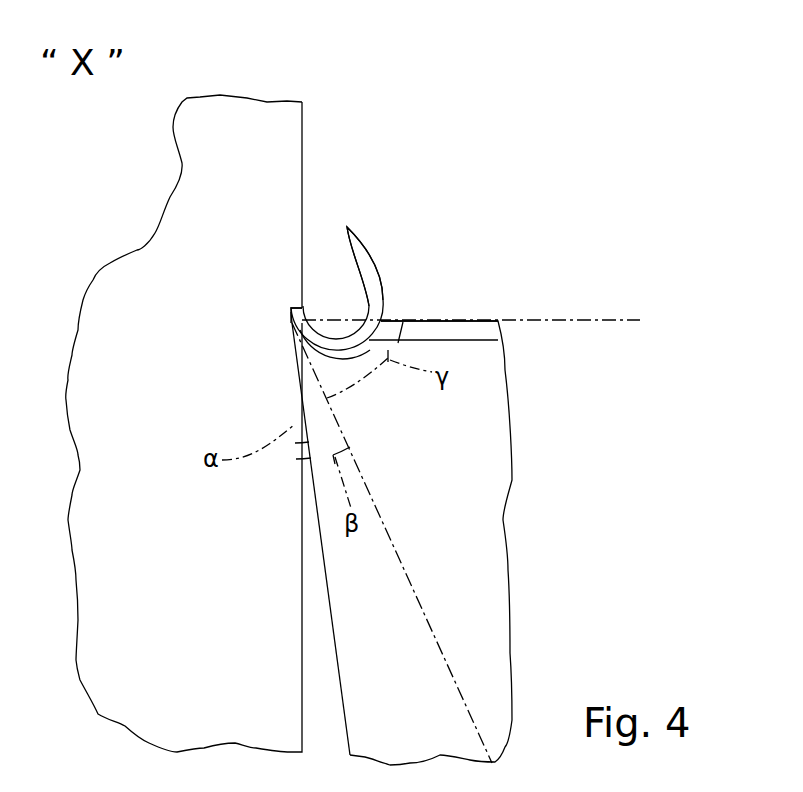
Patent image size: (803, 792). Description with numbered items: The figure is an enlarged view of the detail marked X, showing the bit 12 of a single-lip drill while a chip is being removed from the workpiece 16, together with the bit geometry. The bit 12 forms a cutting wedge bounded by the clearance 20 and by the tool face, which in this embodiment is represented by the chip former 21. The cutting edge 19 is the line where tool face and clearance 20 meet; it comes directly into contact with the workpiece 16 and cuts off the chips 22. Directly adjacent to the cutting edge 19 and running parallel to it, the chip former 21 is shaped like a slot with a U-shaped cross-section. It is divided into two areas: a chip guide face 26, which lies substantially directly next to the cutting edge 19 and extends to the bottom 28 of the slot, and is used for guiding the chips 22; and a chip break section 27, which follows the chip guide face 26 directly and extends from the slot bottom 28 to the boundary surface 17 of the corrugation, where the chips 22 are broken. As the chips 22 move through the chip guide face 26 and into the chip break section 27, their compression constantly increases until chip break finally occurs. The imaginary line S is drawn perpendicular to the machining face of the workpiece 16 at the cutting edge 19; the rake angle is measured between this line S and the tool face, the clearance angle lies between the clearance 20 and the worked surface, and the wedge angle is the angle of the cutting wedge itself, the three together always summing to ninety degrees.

The bit 12 is at (570, 447).
The workpiece 16 is at (174, 333).
The boundary surface of corrugation 17 is at (465, 321).
The cutting edge 19 is at (292, 306).
The clearance 20 is at (327, 585).
The chip former 21 is at (322, 306).
The chips 22 is at (362, 257).
The chip guide face 26 is at (291, 326).
The chip break section 27 is at (498, 340).
The slot bottom 28 is at (348, 352).
The imaginary line perpendicular to the machining face S is at (610, 320).